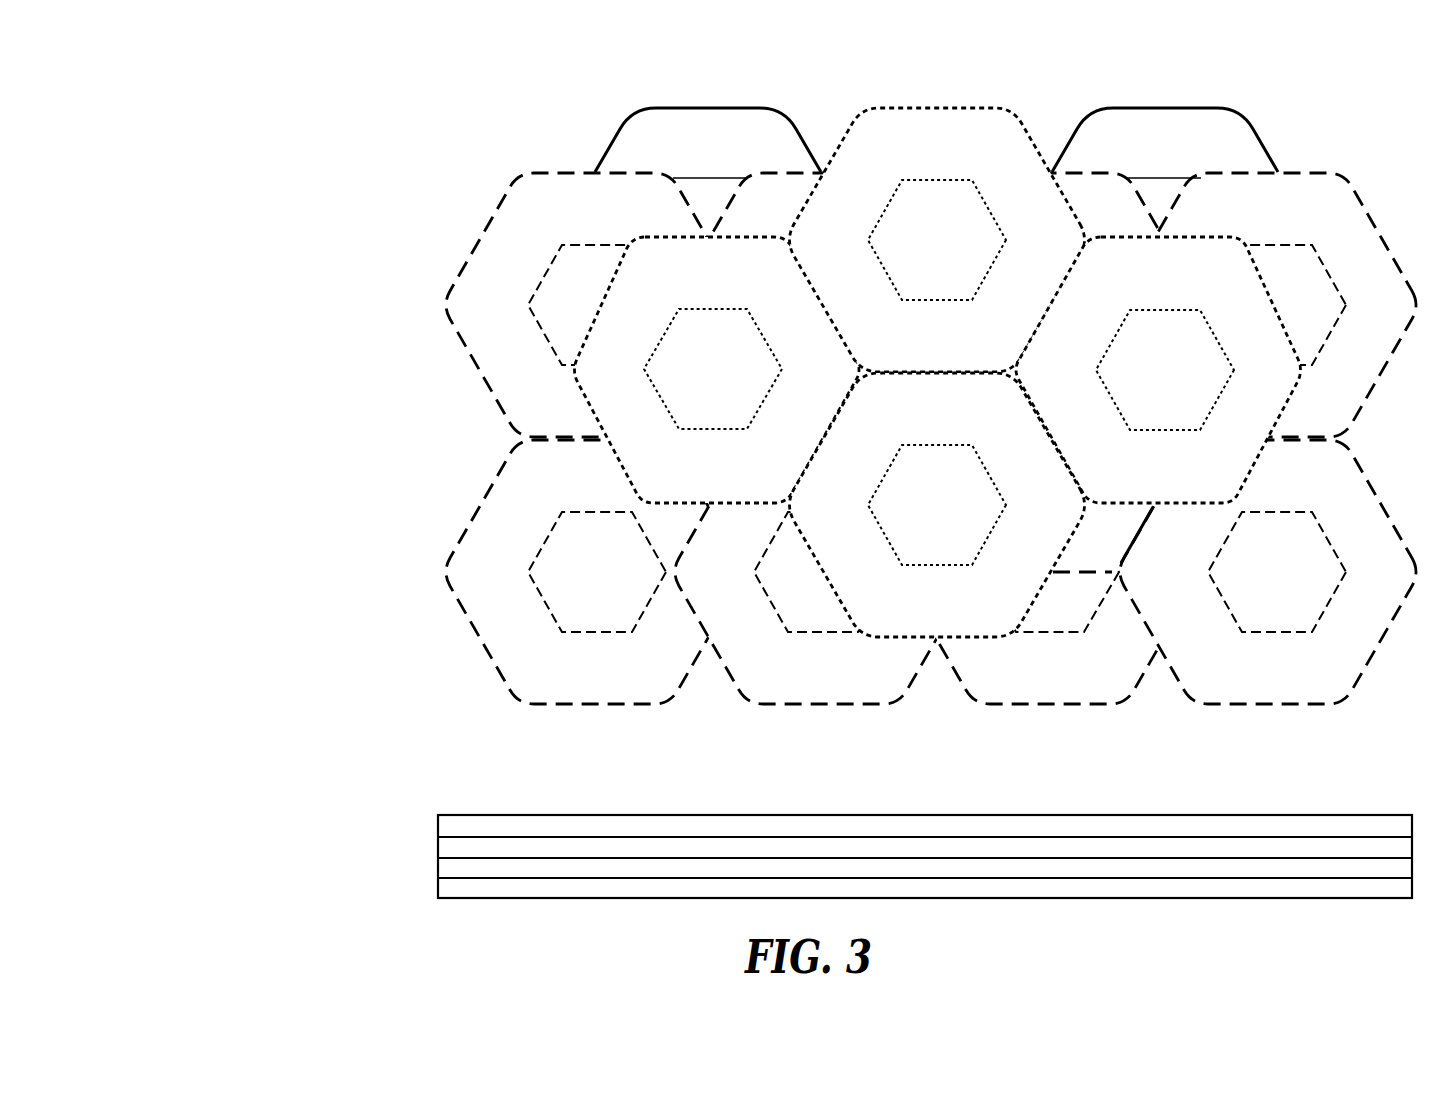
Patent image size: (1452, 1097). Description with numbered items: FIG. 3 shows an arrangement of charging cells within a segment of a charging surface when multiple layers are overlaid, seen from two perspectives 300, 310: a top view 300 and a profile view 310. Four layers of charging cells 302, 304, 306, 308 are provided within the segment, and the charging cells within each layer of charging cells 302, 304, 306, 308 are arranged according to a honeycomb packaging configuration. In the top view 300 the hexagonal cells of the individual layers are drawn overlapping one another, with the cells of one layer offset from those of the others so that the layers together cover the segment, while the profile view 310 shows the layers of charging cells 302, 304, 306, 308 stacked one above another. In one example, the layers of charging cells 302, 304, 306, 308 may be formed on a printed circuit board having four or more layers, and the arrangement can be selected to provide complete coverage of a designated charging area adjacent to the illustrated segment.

The top view perspective 300 is at (768, 473).
The layer of charging cells 302 is at (913, 133).
The layer of charging cells 304 is at (1357, 509).
The layer of charging cells 306 is at (527, 195).
The layer of charging cells 308 is at (1202, 125).
The profile view perspective 310 is at (160, 747).